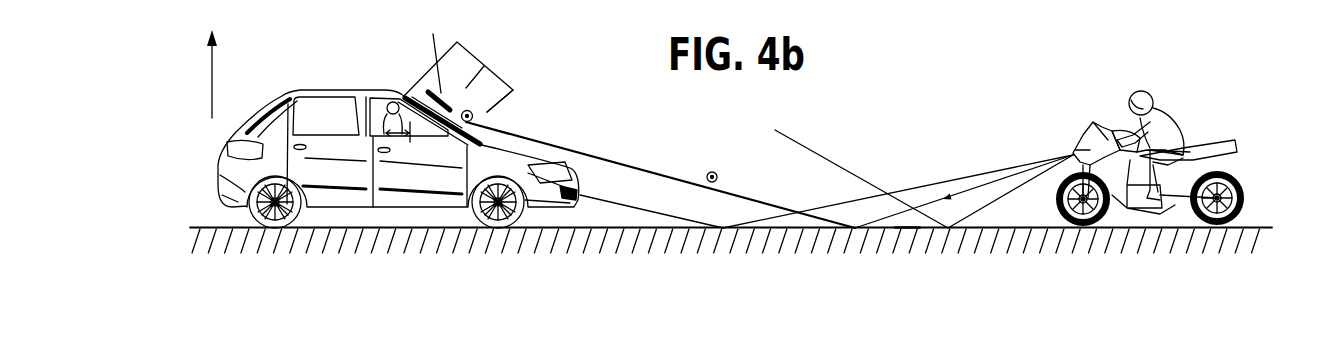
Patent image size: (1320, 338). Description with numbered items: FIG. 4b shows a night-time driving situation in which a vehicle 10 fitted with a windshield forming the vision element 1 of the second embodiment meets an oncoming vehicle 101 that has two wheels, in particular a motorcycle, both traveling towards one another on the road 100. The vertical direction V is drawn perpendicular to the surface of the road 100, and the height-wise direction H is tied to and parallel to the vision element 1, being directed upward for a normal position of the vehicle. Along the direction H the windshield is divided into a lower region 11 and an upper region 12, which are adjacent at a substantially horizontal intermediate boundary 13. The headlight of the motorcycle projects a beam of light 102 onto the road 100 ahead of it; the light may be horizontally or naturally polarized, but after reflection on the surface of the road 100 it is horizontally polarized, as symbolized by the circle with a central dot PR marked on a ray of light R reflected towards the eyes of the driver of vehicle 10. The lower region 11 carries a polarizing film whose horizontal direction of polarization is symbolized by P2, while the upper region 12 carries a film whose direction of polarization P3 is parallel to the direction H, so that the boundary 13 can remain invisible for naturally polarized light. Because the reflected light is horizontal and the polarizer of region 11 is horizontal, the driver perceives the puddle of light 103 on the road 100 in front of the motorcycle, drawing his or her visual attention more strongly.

The vision element 1 is at (401, 94).
The vehicle 10 is at (318, 91).
The lower region 11 is at (505, 82).
The upper region 12 is at (458, 68).
The intermediate boundary 13 is at (450, 110).
The road surface 100 is at (437, 231).
The vehicle 101 is at (1213, 140).
The beam of light 102 is at (903, 188).
The spot of light 103 is at (907, 231).
The horizontal direction of polarization P2 is at (474, 116).
The direction of polarization P3 is at (435, 51).
The height-wise direction H is at (407, 132).
The ray of light R is at (709, 170).
The polarization orientation PR is at (719, 175).
The vertical direction V is at (201, 62).